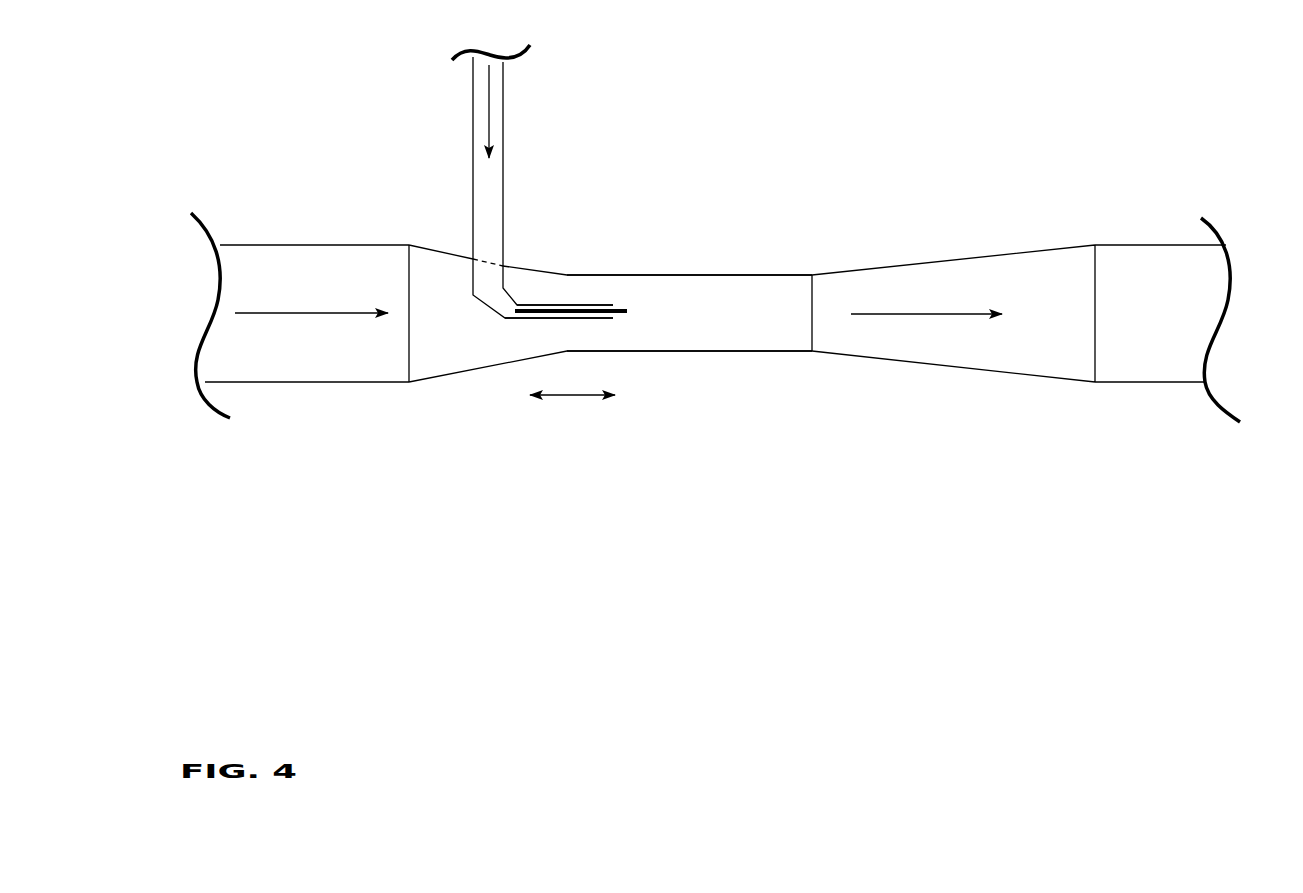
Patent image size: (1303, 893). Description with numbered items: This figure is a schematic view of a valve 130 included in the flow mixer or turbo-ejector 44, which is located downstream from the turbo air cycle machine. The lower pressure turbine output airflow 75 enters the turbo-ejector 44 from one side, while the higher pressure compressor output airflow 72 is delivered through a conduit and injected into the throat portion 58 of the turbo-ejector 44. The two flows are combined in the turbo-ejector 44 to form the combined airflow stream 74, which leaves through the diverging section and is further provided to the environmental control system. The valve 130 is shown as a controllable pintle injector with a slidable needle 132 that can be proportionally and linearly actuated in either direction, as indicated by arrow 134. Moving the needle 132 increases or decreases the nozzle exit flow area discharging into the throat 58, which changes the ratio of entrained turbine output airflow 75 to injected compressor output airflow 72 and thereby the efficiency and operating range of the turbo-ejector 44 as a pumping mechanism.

The turbo-ejector 44 is at (580, 262).
The throat portion 58 is at (745, 312).
The compressor output airflow 72 is at (489, 120).
The combined airflow stream 74 is at (923, 314).
The turbine output airflow 75 is at (323, 314).
The valve 130 is at (534, 318).
The slidable needle 132 is at (596, 314).
The arrow 134 is at (574, 397).